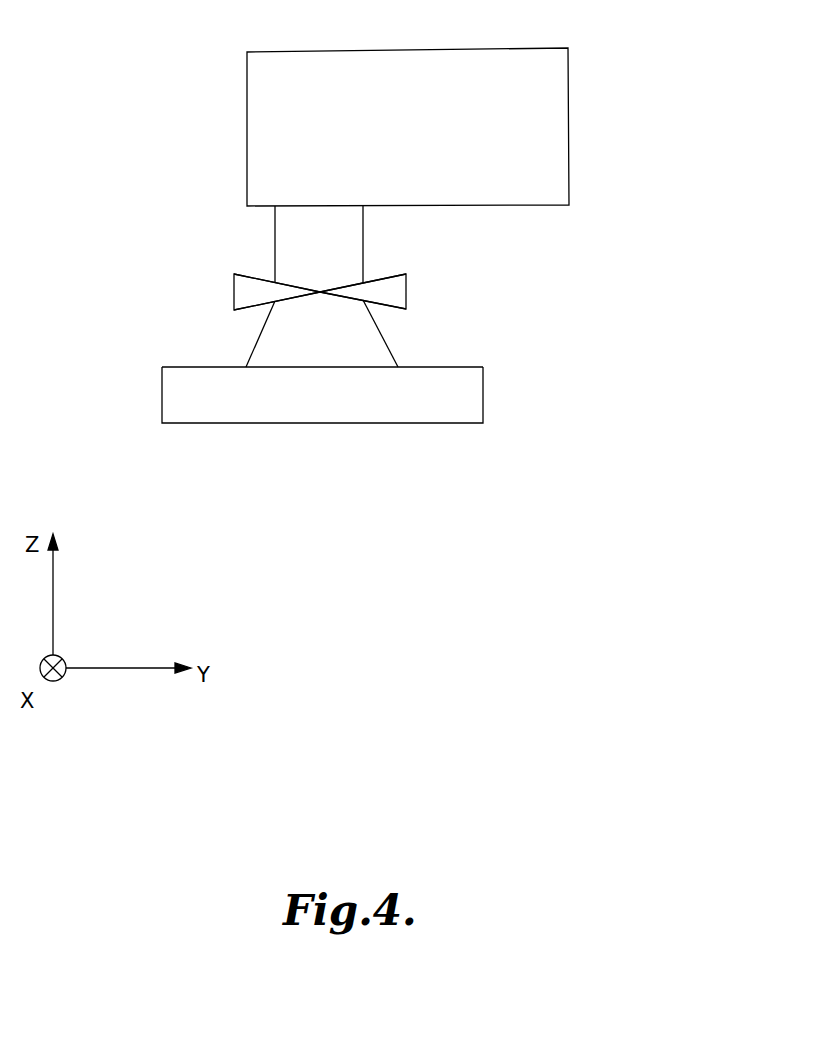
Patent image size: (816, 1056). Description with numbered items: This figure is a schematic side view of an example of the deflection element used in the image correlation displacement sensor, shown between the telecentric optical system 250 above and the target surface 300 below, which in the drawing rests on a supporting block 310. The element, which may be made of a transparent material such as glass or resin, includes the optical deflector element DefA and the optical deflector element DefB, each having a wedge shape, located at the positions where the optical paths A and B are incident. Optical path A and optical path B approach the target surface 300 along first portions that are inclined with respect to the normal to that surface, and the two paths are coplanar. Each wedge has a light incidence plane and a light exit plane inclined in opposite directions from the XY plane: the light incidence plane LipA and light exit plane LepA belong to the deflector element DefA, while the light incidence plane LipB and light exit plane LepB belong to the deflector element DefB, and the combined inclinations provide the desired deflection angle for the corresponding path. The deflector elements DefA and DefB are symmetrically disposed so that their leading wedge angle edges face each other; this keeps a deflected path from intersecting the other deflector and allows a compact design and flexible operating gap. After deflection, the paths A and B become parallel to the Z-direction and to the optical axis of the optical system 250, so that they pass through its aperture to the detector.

The optical system 250 is at (569, 93).
The target surface 300 is at (172, 366).
The support base 310 is at (162, 397).
The light exit plane LepB is at (246, 273).
The optical deflector element DefB is at (233, 288).
The light incidence plane LipB is at (243, 310).
The optical path B is at (260, 337).
The light exit plane LepA is at (393, 273).
The optical deflector element DefA is at (407, 290).
The light incidence plane LipA is at (405, 309).
The optical path A is at (383, 330).